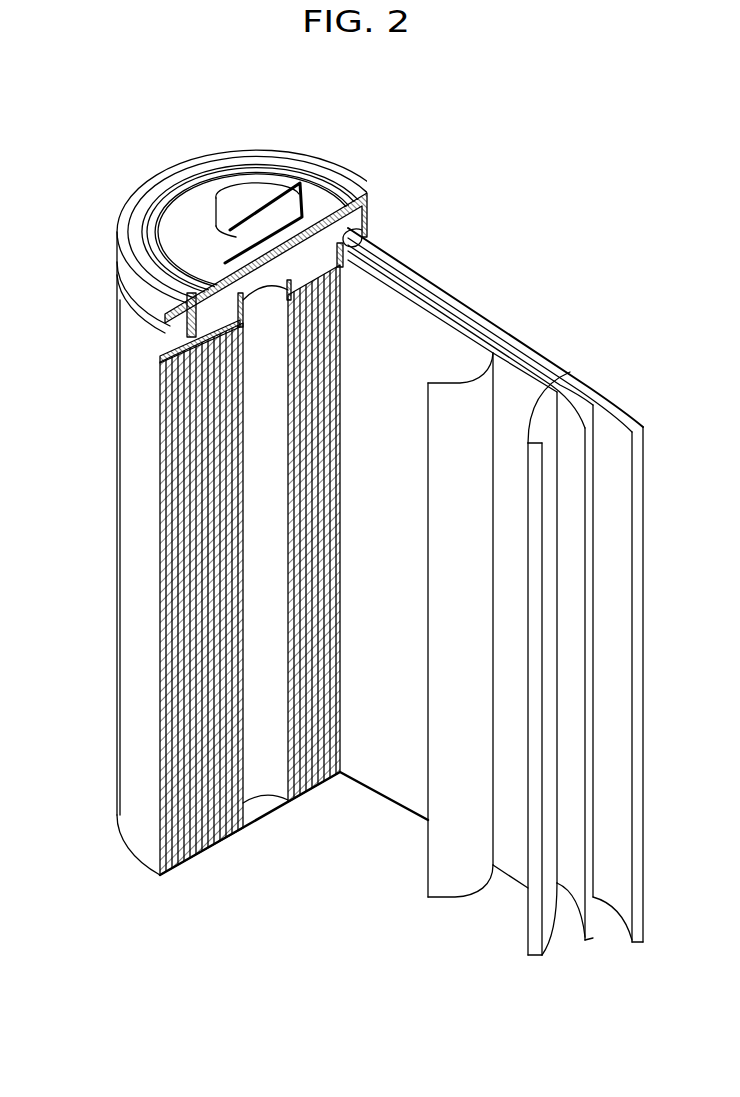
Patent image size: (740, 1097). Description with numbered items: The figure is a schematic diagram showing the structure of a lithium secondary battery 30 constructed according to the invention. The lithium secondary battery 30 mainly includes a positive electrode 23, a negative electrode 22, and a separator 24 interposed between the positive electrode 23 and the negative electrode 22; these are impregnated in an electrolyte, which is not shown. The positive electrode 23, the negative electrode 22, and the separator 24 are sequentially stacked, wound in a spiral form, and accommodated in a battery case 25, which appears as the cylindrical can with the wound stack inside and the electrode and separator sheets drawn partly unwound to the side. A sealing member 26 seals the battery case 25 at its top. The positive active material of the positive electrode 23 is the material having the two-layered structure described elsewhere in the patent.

The lithium secondary battery 30 is at (323, 91).
The negative electrode 22 is at (618, 398).
The positive electrode 23 is at (543, 393).
The separator 24 is at (463, 387).
The battery case 25 is at (122, 555).
The sealing member 26 is at (237, 193).